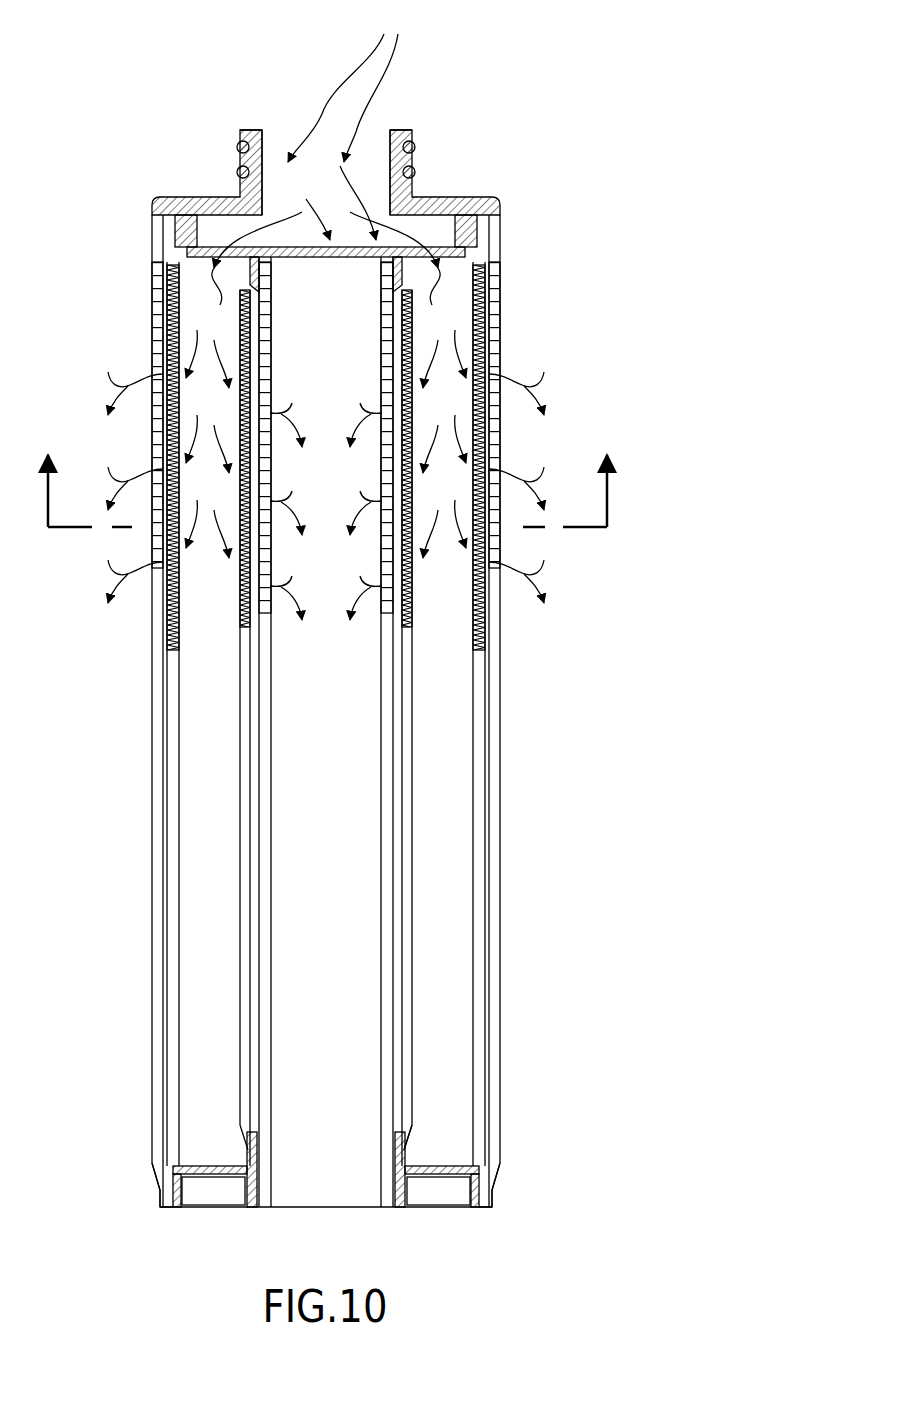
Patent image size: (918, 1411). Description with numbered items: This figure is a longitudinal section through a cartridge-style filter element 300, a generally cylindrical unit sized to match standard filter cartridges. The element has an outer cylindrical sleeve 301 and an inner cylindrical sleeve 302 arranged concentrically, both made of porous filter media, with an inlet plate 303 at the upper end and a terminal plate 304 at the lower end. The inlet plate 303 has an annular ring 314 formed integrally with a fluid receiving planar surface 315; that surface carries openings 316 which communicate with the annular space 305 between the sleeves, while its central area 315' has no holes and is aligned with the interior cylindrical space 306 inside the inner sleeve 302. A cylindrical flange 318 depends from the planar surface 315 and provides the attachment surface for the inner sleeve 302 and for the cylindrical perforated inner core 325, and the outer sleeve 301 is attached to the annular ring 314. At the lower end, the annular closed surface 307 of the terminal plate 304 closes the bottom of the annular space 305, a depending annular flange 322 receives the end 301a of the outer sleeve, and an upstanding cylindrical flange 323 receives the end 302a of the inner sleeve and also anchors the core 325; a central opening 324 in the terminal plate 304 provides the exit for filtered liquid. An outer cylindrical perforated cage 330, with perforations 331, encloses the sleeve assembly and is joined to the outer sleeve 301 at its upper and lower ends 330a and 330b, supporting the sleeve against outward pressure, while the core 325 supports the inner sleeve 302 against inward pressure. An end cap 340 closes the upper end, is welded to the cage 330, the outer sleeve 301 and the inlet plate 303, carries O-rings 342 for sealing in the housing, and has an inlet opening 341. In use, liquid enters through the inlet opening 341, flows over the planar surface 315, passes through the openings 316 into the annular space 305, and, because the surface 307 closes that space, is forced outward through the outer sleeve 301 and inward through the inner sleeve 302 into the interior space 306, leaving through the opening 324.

The filter element 300 is at (600, 276).
The outer cylindrical sleeve 301 is at (170, 767).
The end of outer sleeve 301a is at (162, 1209).
The inner cylindrical sleeve 302 is at (240, 887).
The end of inner sleeve 302a is at (415, 1132).
The inlet plate 303 is at (340, 186).
The terminal plate 304 is at (430, 1152).
The annular space 305 is at (419, 424).
The interior cylindrical space 306 is at (299, 661).
The annular closed surface 307 is at (232, 1167).
The annular ring 314 is at (207, 232).
The fluid receiving planar surface 315 is at (326, 234).
The central area 315' is at (307, 203).
The openings 316 is at (472, 202).
The cylindrical flange 318 is at (262, 277).
The depending annular flange 322 is at (185, 1182).
The upstanding cylindrical flange 323 is at (390, 1152).
The opening 324 is at (355, 1207).
The cylindrical perforated inner core 325 is at (271, 732).
The outer cylindrical perforated cage 330 is at (500, 772).
The upper end of outer cage 330a is at (503, 227).
The lower end of outer cage 330b is at (492, 1187).
The perforations 331 is at (500, 325).
The end cap 340 is at (175, 177).
The inlet opening 341 is at (272, 132).
The O-rings 342 is at (418, 173).